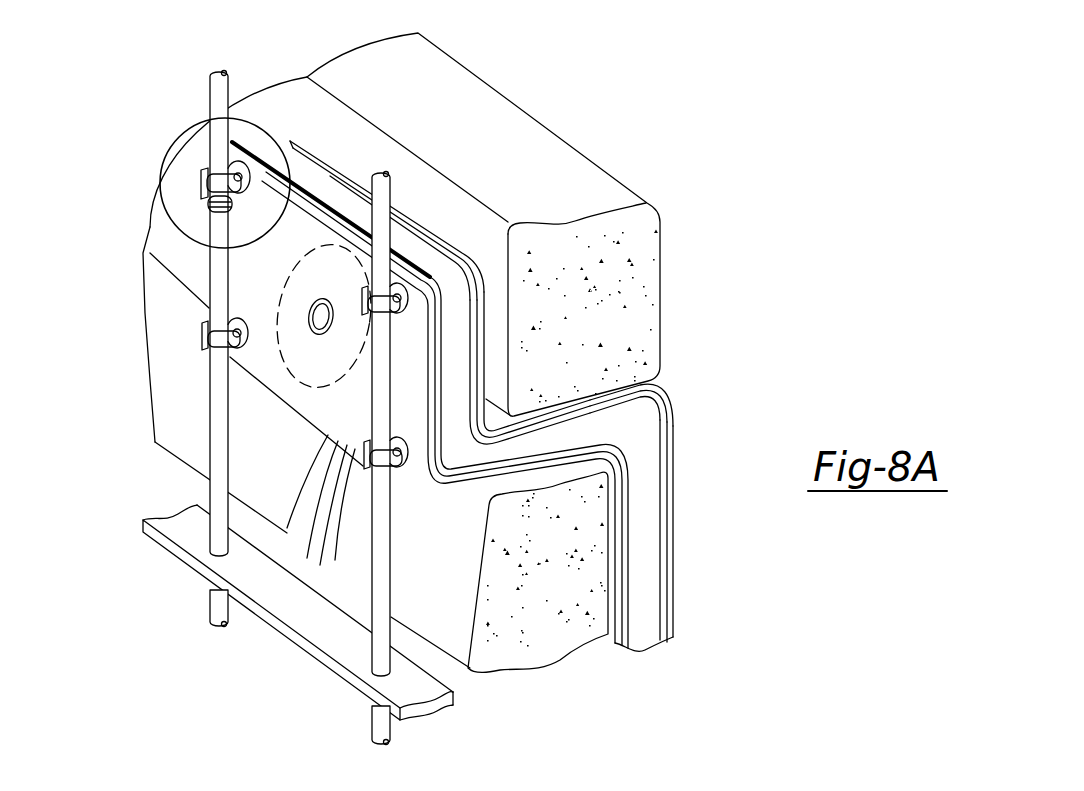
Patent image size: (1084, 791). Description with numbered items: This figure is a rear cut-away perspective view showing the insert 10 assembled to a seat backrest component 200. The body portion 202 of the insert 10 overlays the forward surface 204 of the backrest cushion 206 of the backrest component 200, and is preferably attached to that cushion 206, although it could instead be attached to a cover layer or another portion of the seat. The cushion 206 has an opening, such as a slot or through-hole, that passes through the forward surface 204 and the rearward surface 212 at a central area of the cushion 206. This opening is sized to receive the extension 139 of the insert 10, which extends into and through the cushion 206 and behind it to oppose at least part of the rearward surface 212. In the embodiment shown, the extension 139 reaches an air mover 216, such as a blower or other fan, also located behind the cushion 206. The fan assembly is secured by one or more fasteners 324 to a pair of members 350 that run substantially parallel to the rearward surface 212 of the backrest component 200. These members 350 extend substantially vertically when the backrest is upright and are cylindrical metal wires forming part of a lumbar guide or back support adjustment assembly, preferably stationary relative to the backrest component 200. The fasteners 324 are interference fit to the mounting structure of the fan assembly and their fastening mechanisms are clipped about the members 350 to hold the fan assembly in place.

The insert 10 is at (437, 391).
The extension 139 is at (637, 437).
The backrest component 200 is at (627, 165).
The body portion 202 is at (695, 586).
The forward surface 204 is at (616, 540).
The backrest cushion 206 is at (638, 292).
The rearward surface 212 is at (448, 577).
The air mover 216 is at (257, 277).
The fastener 324 is at (398, 292).
The members 350 is at (383, 405).